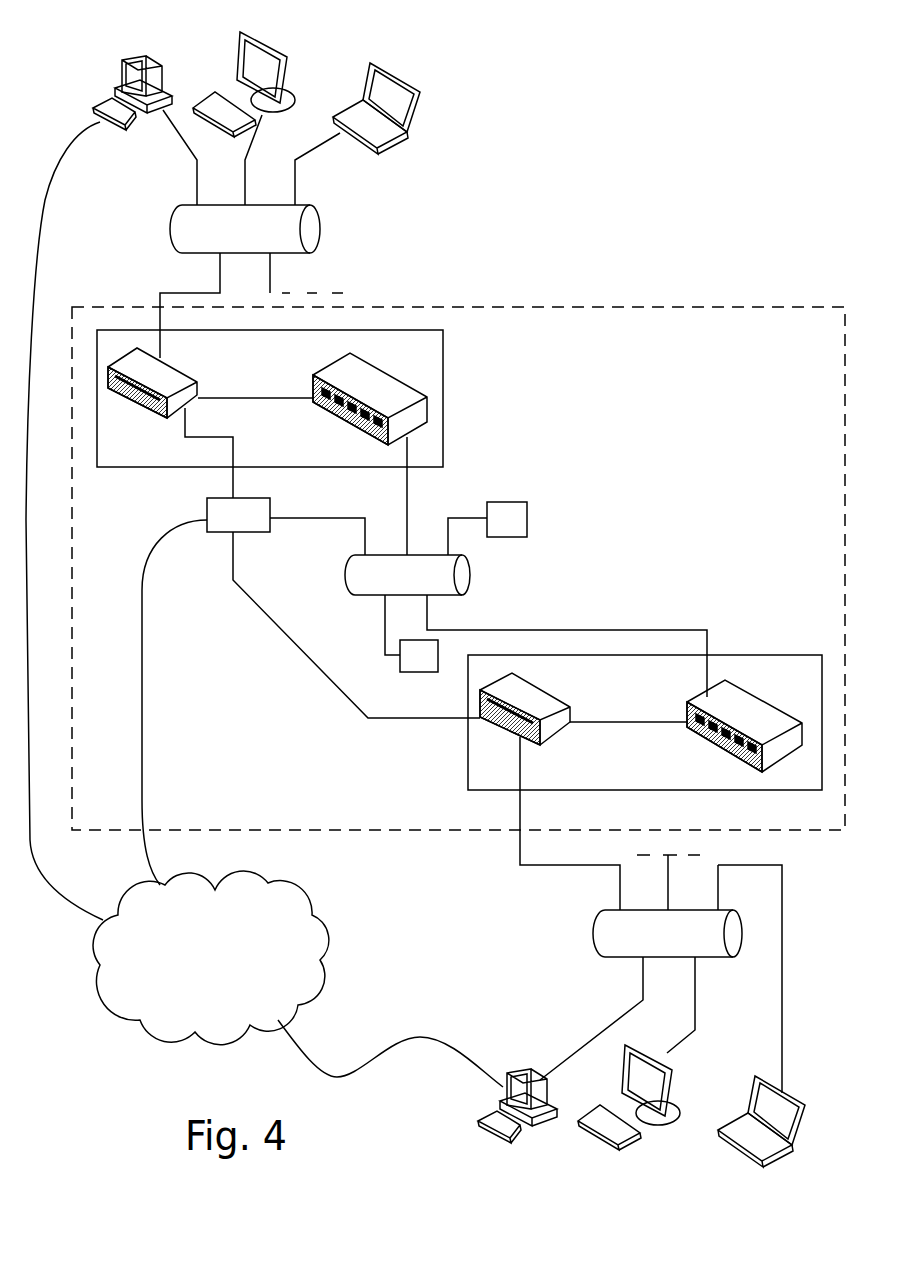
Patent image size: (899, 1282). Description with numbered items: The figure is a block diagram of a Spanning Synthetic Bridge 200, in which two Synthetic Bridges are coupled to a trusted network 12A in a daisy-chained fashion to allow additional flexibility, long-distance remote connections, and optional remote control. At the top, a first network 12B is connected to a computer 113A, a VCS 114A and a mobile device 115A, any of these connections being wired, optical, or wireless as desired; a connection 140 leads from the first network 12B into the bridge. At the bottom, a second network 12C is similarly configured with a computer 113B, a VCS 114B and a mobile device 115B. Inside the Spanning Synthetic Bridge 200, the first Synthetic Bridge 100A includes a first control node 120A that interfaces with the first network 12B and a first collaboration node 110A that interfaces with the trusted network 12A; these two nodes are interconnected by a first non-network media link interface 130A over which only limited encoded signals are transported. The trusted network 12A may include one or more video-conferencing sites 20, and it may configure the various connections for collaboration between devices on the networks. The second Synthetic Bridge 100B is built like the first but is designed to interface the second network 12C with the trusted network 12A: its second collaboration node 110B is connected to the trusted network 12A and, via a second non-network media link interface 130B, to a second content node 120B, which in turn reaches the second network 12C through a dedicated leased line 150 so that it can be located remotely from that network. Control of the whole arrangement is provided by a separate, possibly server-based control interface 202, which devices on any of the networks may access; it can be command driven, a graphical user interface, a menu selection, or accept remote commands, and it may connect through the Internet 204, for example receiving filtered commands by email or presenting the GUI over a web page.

The computer 113A is at (172, 37).
The VCS 114A is at (305, 28).
The mobile device 115A is at (422, 54).
The first network 12B is at (322, 225).
The first connection 140 is at (160, 293).
The Spanning Synthetic Bridge 200 is at (790, 361).
The first Synthetic Bridge 100A is at (323, 460).
The first control node 120A is at (185, 372).
The first collaboration node 110A is at (375, 366).
The first non-network media link interface 130A is at (248, 398).
The control interface 202 is at (262, 533).
The video-conferencing site 20 is at (494, 531).
The trusted network 12A is at (470, 568).
The second Synthetic Bridge 100B is at (817, 688).
The second content node 120B is at (540, 688).
The second collaboration node 110B is at (707, 743).
The second non-network media link interface 130B is at (600, 722).
The leased line 150 is at (520, 865).
The second network 12C is at (593, 928).
The computer 113B is at (497, 1133).
The VCS 114B is at (607, 1135).
The mobile device 115B is at (732, 1152).
The Internet 204 is at (227, 996).